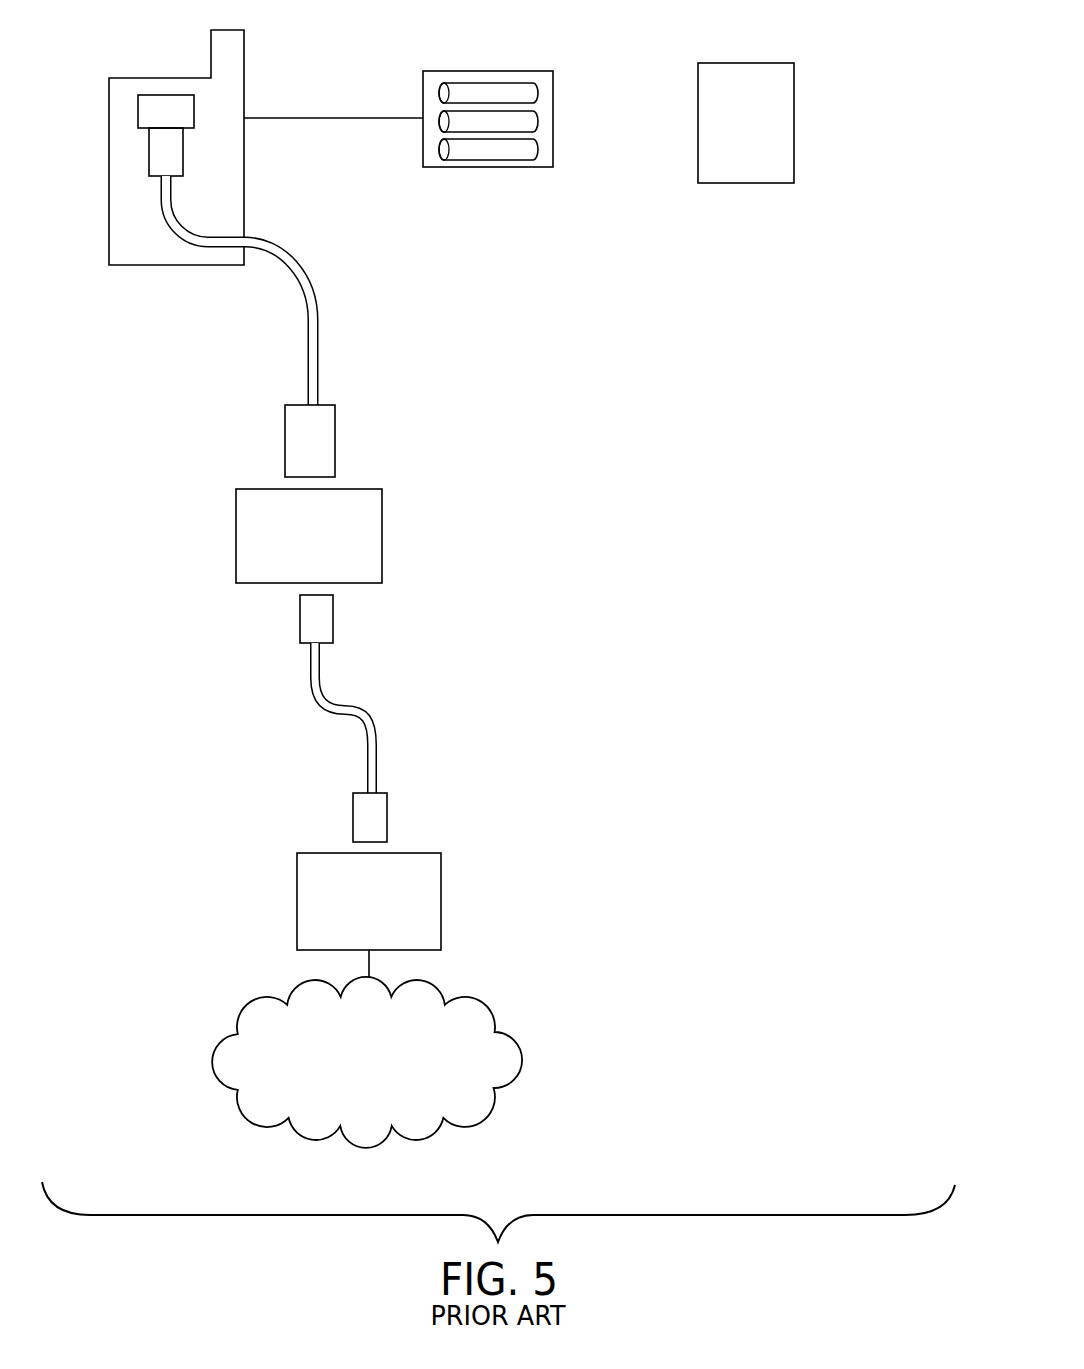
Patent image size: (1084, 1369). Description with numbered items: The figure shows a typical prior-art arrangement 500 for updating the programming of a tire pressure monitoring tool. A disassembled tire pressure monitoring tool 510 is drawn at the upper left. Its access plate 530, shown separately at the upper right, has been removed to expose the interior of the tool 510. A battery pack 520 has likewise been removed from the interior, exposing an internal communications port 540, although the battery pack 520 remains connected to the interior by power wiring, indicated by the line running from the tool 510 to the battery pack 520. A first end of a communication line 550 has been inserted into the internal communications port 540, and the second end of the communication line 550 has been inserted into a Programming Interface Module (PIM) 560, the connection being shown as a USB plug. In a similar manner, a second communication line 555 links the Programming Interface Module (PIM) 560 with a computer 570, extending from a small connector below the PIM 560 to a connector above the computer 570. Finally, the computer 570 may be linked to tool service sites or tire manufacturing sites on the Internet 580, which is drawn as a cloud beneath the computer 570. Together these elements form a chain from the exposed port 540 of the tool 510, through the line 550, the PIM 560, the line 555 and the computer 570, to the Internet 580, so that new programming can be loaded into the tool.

The prior art system 500 is at (762, 418).
The disassembled tire pressure monitoring tool 510 is at (244, 70).
The battery pack 520 is at (488, 70).
The access plate 530 is at (748, 63).
The internal communications port 540 is at (183, 124).
The communication line 550 is at (316, 305).
The second communication line 555 is at (376, 722).
The Programming Interface Module (PIM) 560 is at (382, 538).
The computer 570 is at (441, 900).
The Internet 580 is at (523, 1060).